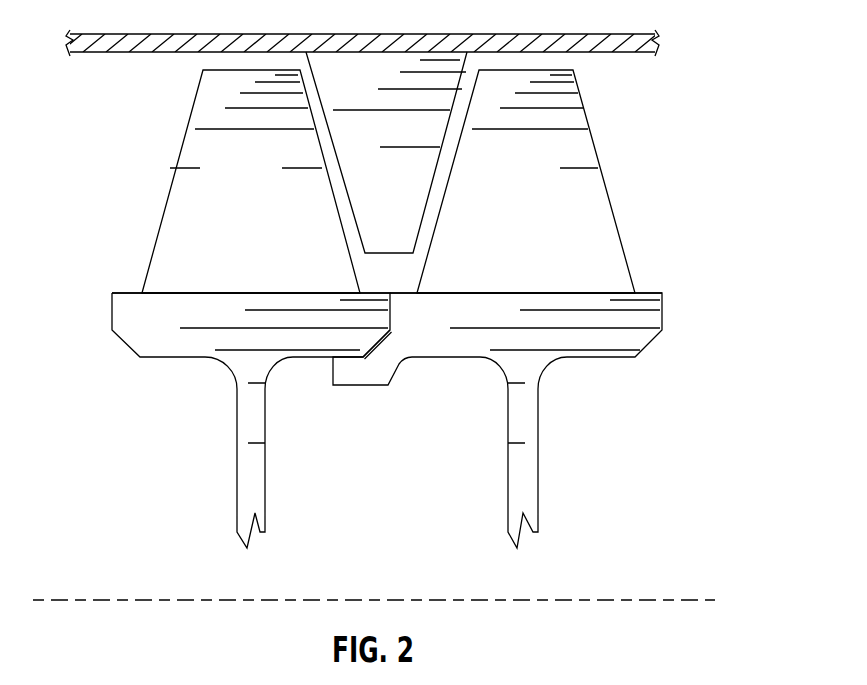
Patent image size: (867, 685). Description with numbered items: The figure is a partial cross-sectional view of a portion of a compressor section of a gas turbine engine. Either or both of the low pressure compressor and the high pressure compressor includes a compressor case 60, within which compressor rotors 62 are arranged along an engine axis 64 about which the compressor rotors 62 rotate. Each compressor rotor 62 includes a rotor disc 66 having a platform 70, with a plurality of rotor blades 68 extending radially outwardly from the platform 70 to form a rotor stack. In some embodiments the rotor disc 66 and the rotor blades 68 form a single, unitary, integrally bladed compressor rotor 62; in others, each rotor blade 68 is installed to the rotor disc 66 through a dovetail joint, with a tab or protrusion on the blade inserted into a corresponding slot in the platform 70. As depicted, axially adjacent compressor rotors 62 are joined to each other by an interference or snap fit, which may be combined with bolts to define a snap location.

The compressor case 60 is at (538, 47).
The compressor rotor 62 is at (112, 313).
The engine axis 64 is at (100, 598).
The rotor disc 66 is at (662, 313).
The rotor blade 68 is at (266, 216).
The platform 70 is at (140, 338).